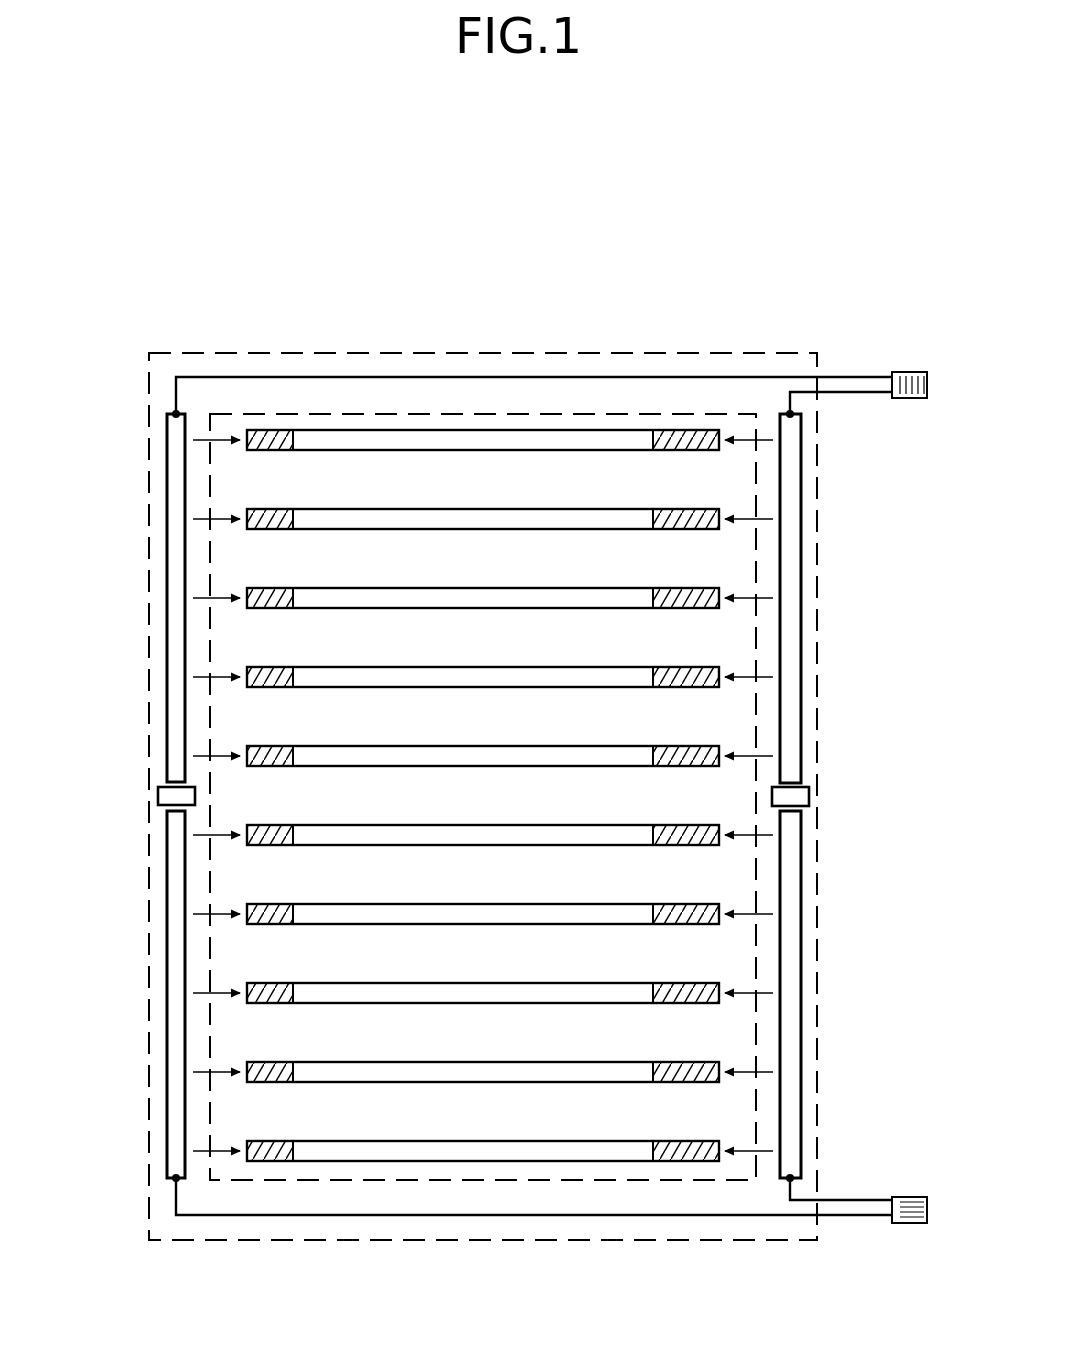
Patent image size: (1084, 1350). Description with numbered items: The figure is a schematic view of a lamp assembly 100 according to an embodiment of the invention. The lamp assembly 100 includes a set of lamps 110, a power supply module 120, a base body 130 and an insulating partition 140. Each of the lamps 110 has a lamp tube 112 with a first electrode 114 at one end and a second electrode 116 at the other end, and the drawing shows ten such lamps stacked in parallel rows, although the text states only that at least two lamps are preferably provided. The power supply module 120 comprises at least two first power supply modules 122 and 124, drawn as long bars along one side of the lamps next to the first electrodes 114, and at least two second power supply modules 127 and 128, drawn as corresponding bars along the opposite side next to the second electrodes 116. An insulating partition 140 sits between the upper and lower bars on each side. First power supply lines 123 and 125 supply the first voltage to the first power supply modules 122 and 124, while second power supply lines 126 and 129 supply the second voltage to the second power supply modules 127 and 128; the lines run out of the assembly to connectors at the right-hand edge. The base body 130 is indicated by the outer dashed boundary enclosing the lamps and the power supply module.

The lamp assembly 100 is at (830, 283).
The lamps 110 is at (707, 298).
The lamp tube 112 is at (578, 433).
The first electrode 114 is at (262, 430).
The second electrode 116 is at (682, 430).
The power supply module 120 is at (830, 668).
The first power supply module 122 is at (170, 578).
The first power supply line 123 is at (176, 377).
The first power supply module 124 is at (170, 990).
The first power supply line 125 is at (179, 1217).
The second power supply line 126 is at (862, 394).
The second power supply module 127 is at (795, 522).
The second power supply module 128 is at (795, 932).
The second power supply line 129 is at (866, 1200).
The base body 130 is at (149, 432).
The insulating partition 140 is at (795, 797).